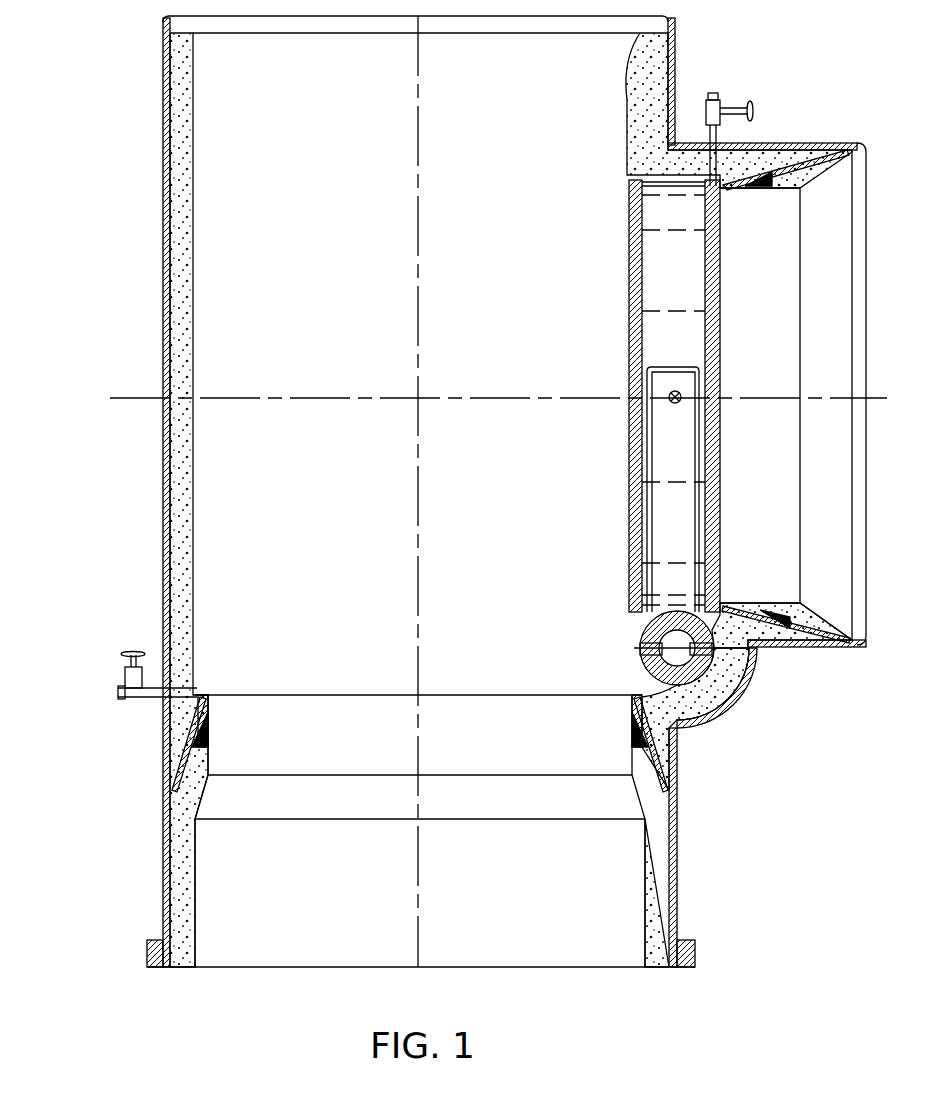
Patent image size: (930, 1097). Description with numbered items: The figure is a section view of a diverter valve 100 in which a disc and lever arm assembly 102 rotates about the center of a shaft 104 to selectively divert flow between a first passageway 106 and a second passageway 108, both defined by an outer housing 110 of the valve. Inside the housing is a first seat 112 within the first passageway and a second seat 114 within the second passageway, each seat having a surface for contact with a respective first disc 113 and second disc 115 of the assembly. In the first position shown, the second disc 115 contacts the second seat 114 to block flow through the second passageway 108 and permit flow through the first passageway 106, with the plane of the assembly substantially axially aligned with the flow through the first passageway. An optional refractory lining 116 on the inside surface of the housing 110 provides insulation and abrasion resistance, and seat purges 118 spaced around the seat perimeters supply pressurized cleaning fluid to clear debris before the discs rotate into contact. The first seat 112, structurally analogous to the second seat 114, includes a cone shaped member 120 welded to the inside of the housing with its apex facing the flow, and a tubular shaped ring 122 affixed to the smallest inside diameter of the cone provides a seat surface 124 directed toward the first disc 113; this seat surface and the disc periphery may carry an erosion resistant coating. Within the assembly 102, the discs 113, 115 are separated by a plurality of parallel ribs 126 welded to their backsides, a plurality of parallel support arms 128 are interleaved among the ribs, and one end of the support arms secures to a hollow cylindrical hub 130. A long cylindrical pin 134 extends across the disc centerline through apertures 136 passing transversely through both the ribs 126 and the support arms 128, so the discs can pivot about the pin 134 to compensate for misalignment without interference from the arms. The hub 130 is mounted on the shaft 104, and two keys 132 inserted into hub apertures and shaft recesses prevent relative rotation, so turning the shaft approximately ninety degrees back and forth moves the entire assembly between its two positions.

The diverter valve 100 is at (60, 243).
The disc and lever arm assembly 102 is at (522, 465).
The shaft 104 is at (676, 656).
The first passageway 106 is at (359, 900).
The second passageway 108 is at (786, 447).
The outer housing 110 is at (165, 338).
The first seat 112 is at (608, 738).
The first disc 113 is at (640, 318).
The second seat 114 is at (748, 195).
The second disc 115 is at (720, 355).
The refractory lining 116 is at (180, 293).
The seat purge 118 is at (728, 105).
The cone shaped member 120 is at (167, 762).
The tubular shaped ring 122 is at (210, 705).
The seat surface 124 is at (330, 692).
The parallel ribs 126 is at (640, 165).
The parallel support arms 128 is at (680, 544).
The hollow cylindrical hub 130 is at (738, 700).
The keys 132 is at (640, 645).
The cylindrical pin 134 is at (672, 400).
The apertures 136 is at (660, 368).